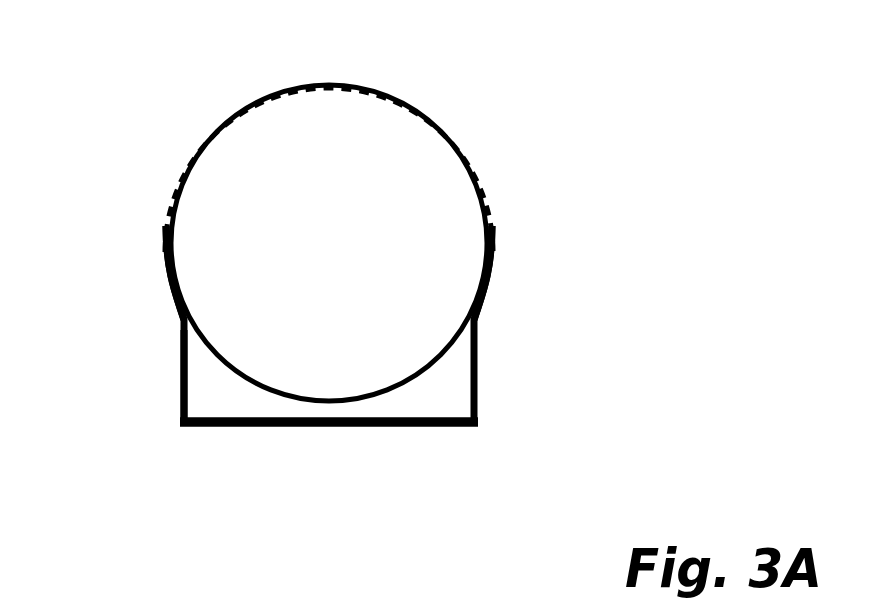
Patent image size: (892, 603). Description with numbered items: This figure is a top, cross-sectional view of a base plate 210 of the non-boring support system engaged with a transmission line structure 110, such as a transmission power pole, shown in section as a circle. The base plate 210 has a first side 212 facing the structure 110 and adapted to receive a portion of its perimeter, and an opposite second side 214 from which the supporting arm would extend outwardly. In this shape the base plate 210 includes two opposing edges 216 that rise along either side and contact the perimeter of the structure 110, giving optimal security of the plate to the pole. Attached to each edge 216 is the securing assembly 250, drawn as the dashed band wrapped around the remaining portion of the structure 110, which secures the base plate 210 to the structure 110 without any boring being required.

The transmission line structure 110 is at (392, 222).
The base plate 210 is at (500, 401).
The first side 212 is at (211, 408).
The second side 214 is at (373, 440).
The edge 216 is at (160, 243).
The securing assembly 250 is at (215, 124).